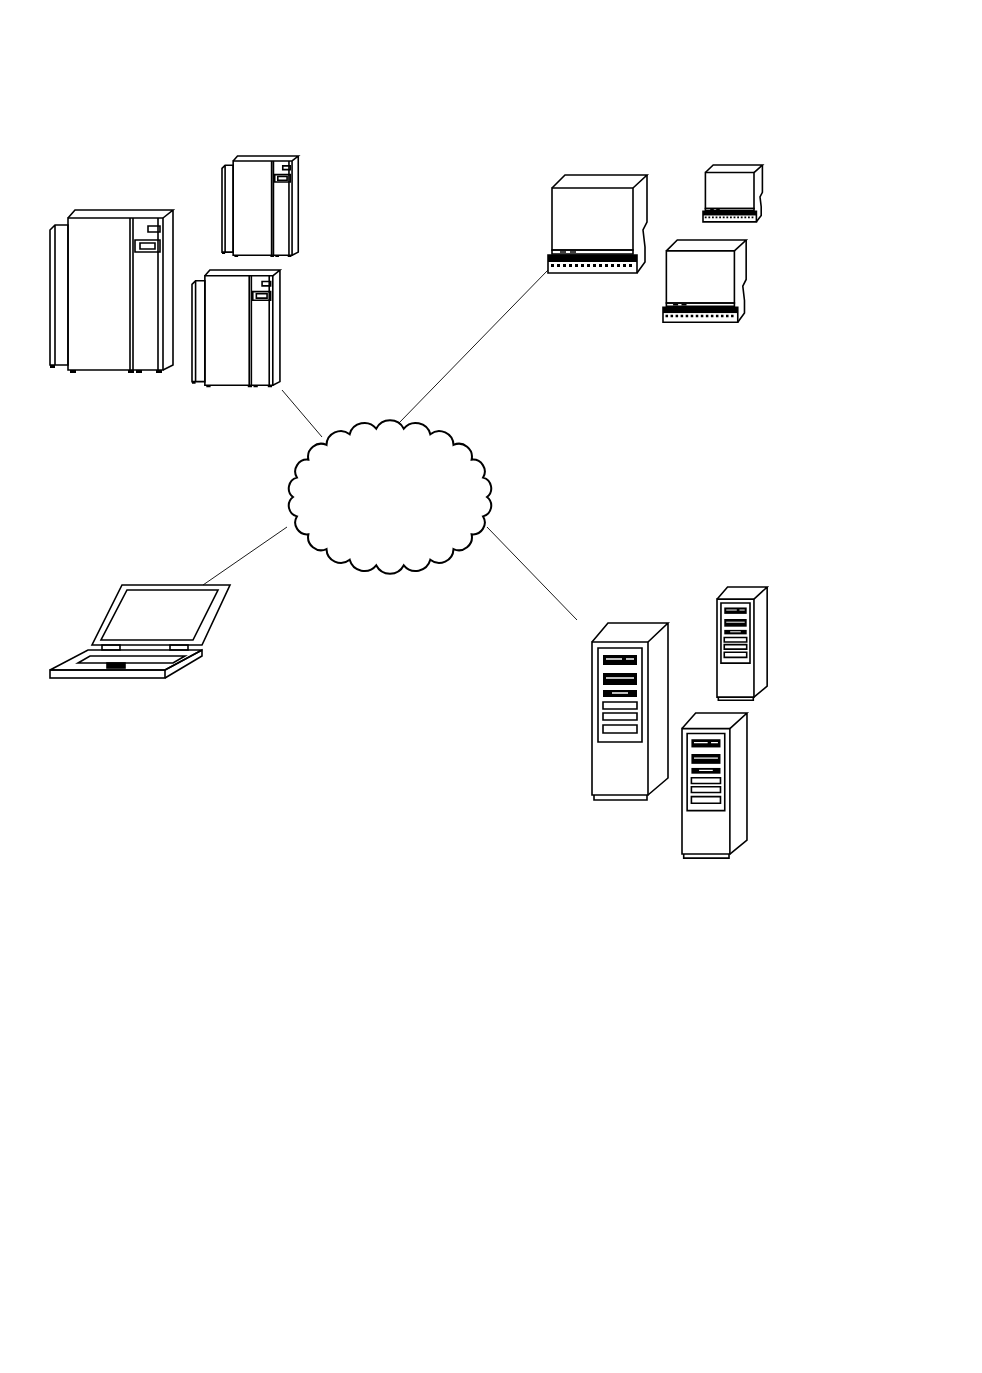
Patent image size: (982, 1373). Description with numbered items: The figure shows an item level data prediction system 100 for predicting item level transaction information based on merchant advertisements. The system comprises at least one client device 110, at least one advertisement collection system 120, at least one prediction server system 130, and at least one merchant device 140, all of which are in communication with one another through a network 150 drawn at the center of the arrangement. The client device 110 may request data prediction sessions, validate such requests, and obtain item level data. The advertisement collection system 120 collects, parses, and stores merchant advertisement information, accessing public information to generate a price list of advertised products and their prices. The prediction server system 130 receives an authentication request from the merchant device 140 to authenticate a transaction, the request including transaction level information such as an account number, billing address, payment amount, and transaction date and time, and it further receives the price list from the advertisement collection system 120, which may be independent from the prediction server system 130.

The item level data prediction system 100 is at (700, 77).
The client device 110 is at (182, 665).
The advertisement collection system 120 is at (590, 712).
The prediction server system 130 is at (296, 208).
The merchant device 140 is at (745, 246).
The network 150 is at (372, 573).